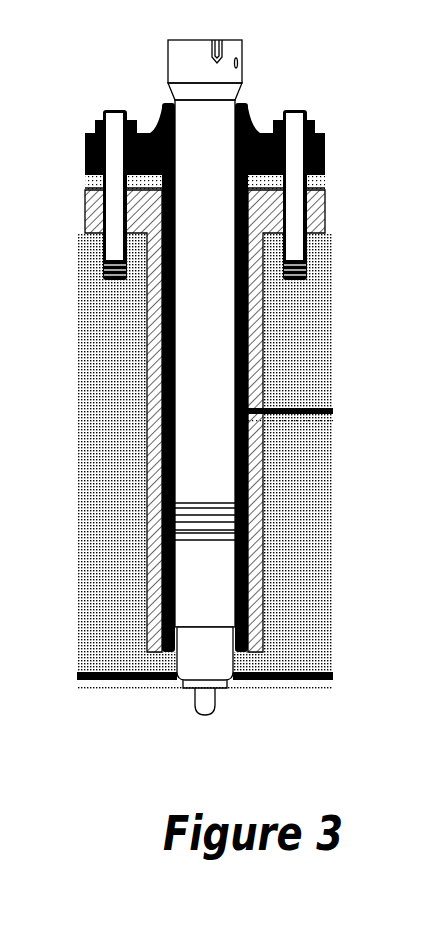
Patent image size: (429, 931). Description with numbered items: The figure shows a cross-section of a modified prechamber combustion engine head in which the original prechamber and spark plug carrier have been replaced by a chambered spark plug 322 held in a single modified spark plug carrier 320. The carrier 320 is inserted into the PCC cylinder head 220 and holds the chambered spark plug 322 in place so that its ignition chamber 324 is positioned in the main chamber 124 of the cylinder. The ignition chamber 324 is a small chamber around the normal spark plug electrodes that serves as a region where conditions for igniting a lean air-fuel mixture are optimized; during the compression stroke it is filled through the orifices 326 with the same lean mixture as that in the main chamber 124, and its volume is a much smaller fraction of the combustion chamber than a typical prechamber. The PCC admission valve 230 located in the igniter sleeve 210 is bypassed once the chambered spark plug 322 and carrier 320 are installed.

The spark plug carrier 320 is at (167, 62).
The igniter sleeve 210 is at (313, 210).
The PCC admission valve 230 is at (330, 412).
The cylinder head 220 is at (303, 535).
The chambered spark plug 322 is at (198, 606).
The orifices 326 is at (196, 704).
The ignition chamber 324 is at (214, 694).
The main chamber 124 is at (222, 751).